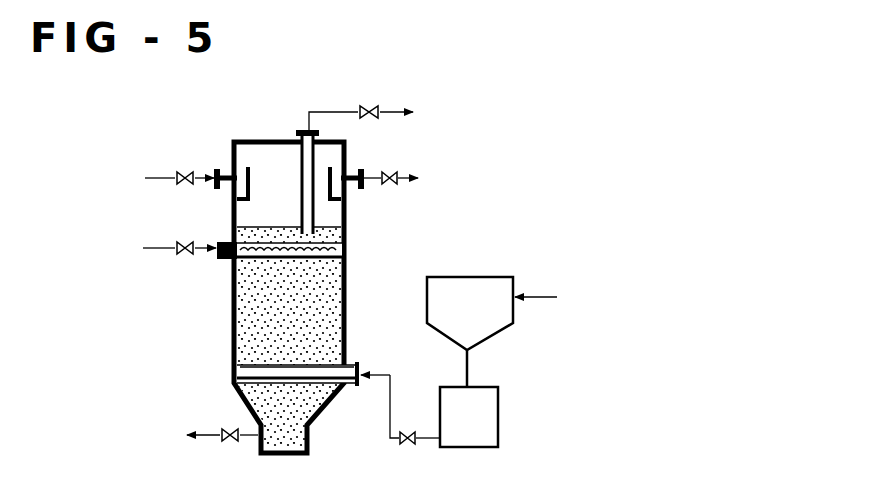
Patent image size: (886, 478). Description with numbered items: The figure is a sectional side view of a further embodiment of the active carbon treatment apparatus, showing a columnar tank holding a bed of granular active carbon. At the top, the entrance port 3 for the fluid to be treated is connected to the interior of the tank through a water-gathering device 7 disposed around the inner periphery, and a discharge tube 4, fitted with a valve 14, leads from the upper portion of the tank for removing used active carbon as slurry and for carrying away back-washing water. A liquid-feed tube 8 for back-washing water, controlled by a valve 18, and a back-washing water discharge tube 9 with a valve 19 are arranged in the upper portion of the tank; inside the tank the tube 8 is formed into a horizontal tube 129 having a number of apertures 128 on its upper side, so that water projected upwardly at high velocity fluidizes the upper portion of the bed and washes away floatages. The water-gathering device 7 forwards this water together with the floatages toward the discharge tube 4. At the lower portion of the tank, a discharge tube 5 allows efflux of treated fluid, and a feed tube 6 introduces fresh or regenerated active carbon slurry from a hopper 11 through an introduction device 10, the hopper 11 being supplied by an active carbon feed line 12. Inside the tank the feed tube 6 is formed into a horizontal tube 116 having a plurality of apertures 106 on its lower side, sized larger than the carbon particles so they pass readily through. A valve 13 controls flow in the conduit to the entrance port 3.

The entrance port 3 is at (215, 170).
The discharge tube 4 is at (303, 130).
The discharge tube 5 is at (251, 441).
The feed tube 6 is at (390, 372).
The water-gathering device 7 is at (268, 169).
The liquid-feed tube 8 is at (218, 262).
The back-washing water discharge tube 9 is at (364, 172).
The introduction device 10 is at (499, 415).
The hopper 11 is at (500, 333).
The active carbon feed line 12 is at (545, 297).
The valve 13 is at (178, 172).
The valve 14 is at (378, 92).
The valve 18 is at (186, 241).
The valve 19 is at (393, 176).
The apertures 106 is at (233, 388).
The horizontal tube 116 is at (240, 362).
The apertures 128 is at (330, 241).
The horizontal tube 129 is at (333, 259).